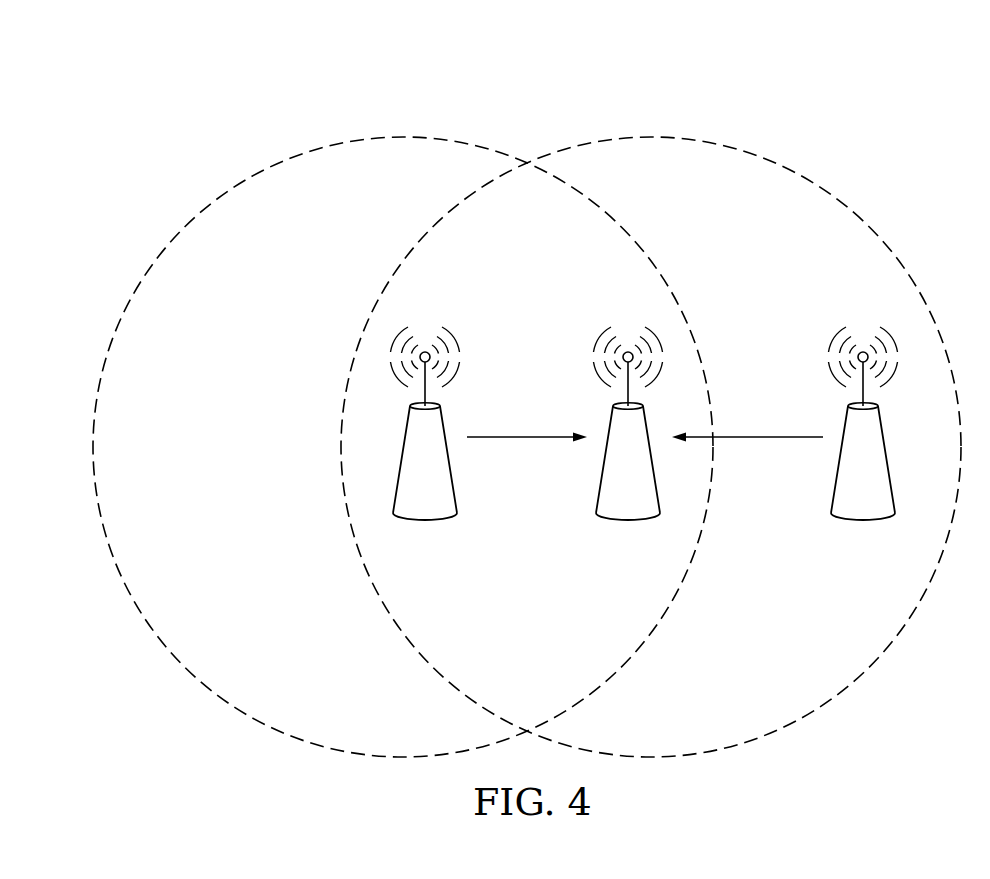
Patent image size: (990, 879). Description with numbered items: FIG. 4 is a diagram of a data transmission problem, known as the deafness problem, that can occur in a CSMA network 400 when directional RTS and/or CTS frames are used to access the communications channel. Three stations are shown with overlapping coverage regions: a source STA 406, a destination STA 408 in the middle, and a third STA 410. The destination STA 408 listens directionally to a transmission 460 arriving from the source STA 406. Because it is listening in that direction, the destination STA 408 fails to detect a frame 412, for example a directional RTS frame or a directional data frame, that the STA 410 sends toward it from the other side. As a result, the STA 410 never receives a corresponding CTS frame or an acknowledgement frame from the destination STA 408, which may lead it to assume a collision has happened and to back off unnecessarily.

The CSMA network 400 is at (253, 73).
The source STA 406 is at (412, 521).
The destination STA 408 is at (637, 521).
The STA 410 is at (872, 521).
The transmission 460 is at (521, 435).
The frame 412 is at (748, 435).